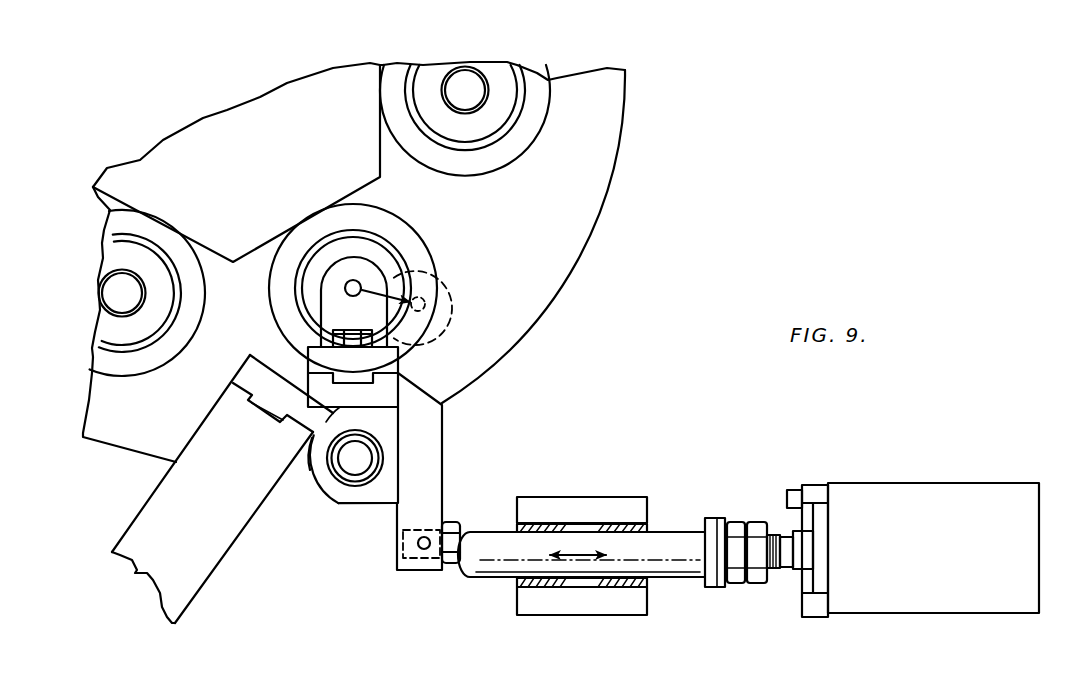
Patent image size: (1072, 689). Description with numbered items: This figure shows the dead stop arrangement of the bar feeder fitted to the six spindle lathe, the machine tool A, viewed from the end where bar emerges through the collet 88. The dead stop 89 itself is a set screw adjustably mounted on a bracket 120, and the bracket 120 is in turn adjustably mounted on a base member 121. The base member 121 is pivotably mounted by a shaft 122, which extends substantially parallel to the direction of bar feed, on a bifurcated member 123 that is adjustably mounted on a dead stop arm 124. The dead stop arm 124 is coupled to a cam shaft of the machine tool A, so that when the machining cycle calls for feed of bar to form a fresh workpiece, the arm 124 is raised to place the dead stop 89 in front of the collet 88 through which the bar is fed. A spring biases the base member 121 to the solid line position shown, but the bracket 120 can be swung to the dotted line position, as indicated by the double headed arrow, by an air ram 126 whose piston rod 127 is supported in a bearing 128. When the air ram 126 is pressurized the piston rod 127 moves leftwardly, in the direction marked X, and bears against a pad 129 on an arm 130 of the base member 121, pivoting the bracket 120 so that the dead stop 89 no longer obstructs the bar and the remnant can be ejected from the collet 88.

The collet 88 is at (478, 102).
The dead stop 89 is at (347, 291).
The bracket 120 is at (392, 363).
The base member 121 is at (392, 417).
The shaft 122 is at (354, 465).
The bifurcated member 123 is at (312, 448).
The dead stop arm 124 is at (215, 528).
The air ram 126 is at (907, 593).
The piston rod 127 is at (682, 565).
The bearing 128 is at (633, 503).
The pad 129 is at (458, 528).
The arm 130 is at (427, 488).
The machine tool A is at (617, 187).
The direction X is at (644, 358).